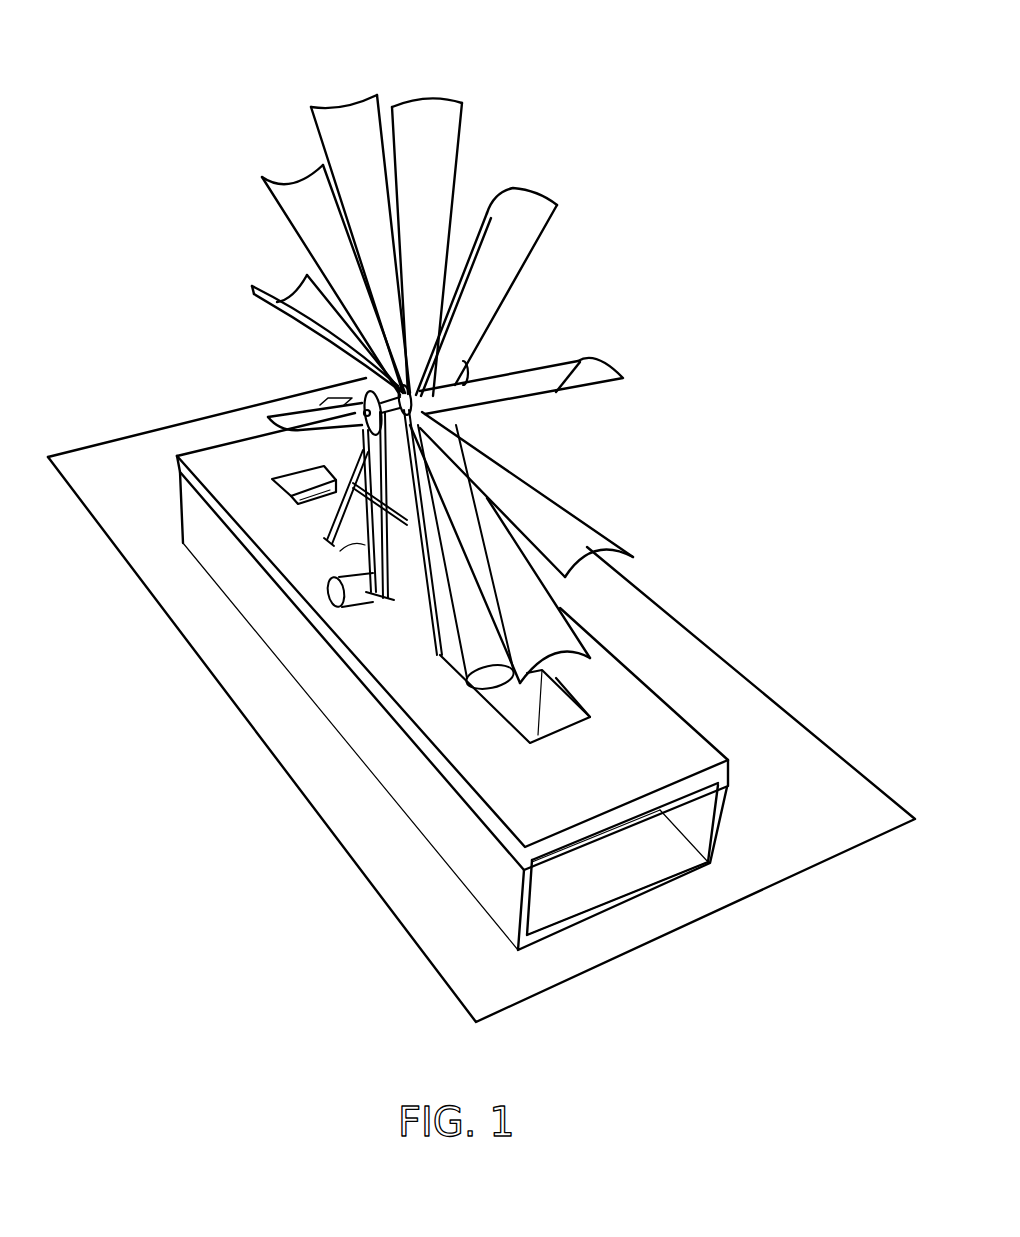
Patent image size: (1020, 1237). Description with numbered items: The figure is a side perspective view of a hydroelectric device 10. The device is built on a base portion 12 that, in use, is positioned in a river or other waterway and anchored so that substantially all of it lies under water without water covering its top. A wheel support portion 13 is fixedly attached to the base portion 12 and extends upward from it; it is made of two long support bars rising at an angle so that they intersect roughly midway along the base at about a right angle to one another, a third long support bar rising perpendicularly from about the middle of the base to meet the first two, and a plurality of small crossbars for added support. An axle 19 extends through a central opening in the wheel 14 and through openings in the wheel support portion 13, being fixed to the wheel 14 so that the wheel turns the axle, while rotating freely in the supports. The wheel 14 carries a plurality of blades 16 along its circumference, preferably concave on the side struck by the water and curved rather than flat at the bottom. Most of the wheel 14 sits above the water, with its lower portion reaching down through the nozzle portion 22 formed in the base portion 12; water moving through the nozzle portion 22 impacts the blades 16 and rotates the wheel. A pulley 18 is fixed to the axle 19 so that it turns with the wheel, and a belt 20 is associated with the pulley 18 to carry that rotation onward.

The hydroelectric device 10 is at (666, 226).
The base portion 12 is at (676, 734).
The wheel support portion 13 is at (436, 618).
The wheel 14 is at (442, 342).
The blades 16 is at (454, 137).
The pulley 18 is at (365, 398).
The axle 19 is at (386, 398).
The belt 20 is at (362, 454).
The nozzle portion 22 is at (297, 494).